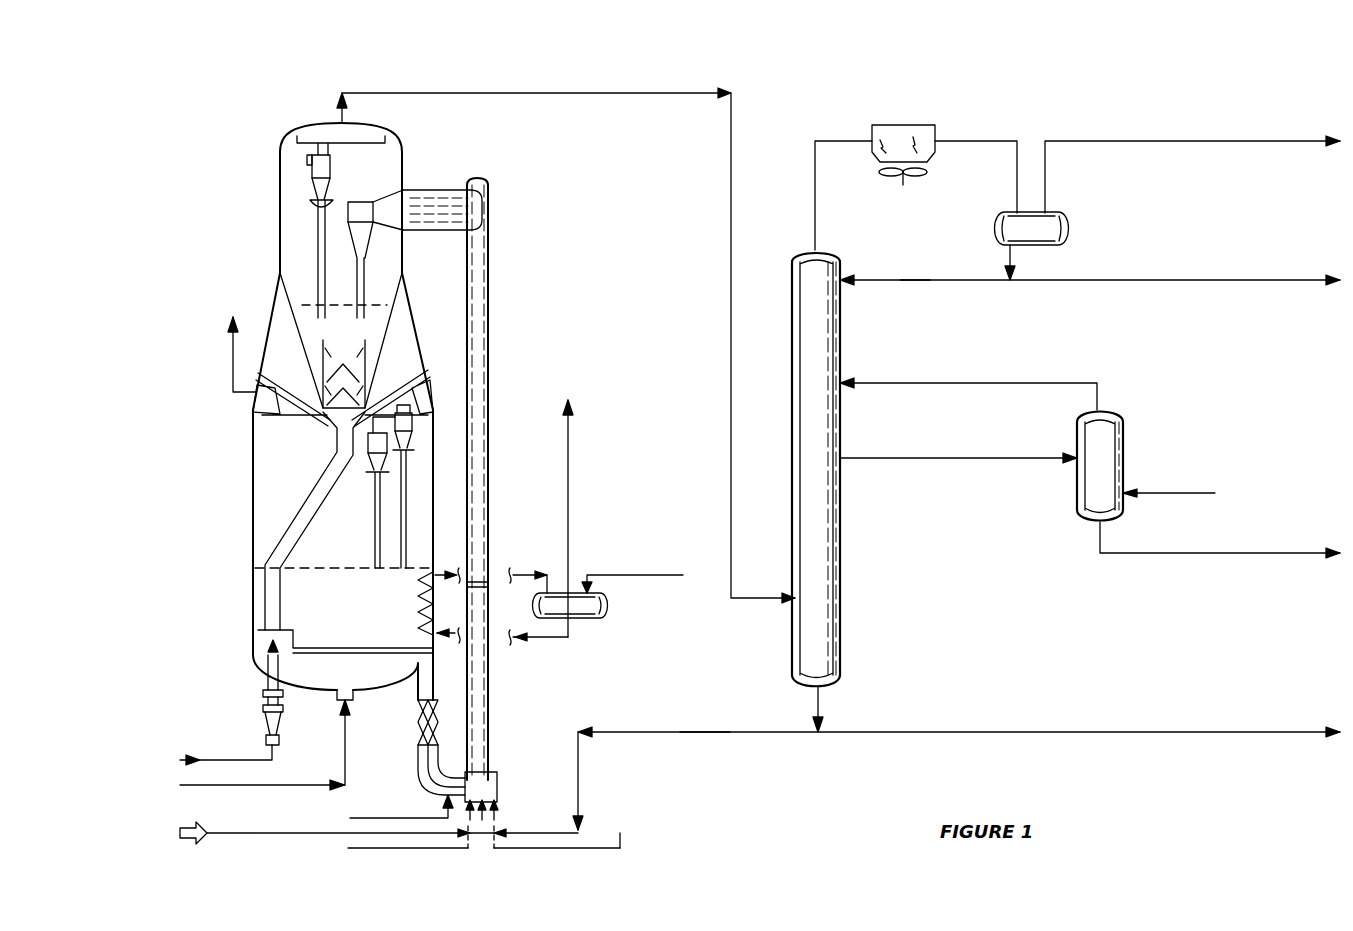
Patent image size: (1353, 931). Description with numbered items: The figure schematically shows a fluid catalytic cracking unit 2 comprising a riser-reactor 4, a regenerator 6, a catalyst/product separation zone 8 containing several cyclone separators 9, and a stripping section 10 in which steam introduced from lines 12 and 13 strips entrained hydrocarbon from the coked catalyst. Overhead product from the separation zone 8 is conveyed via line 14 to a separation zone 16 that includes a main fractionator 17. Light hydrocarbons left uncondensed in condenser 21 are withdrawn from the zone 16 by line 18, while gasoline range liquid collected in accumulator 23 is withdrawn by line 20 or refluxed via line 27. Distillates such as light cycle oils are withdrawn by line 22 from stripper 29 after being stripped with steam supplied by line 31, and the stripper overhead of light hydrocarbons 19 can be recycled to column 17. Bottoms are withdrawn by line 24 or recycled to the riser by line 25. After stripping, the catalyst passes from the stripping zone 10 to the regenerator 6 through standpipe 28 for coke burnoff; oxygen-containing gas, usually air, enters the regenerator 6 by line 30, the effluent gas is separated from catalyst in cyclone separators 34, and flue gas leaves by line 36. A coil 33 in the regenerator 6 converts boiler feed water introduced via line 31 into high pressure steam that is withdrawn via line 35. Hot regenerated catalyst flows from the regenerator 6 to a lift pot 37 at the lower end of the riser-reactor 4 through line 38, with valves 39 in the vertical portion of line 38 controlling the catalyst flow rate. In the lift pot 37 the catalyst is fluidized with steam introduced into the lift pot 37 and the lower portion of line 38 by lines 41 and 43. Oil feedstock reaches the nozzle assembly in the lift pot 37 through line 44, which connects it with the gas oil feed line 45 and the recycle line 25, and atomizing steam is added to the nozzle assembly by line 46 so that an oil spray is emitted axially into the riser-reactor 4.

The fluid catalytic cracking unit 2 is at (216, 265).
The riser-reactor 4 is at (491, 316).
The regenerator 6 is at (252, 456).
The catalyst/product separation zone 8 is at (280, 194).
The cyclone separators 9 is at (334, 166).
The stripping section 10 is at (323, 369).
The steam line 12 is at (437, 374).
The steam line 13 is at (232, 757).
The overhead product line 14 is at (587, 94).
The separation zone 16 is at (838, 124).
The main fractionator 17 is at (844, 369).
The light hydrocarbon line 18 is at (1162, 140).
The stripper overhead 19 is at (992, 382).
The gasoline withdrawal line 20 is at (1212, 279).
The condenser 21 is at (911, 125).
The distillate line 22 is at (1185, 555).
The accumulator 23 is at (1070, 229).
The bottoms line 24 is at (1010, 731).
The recycle line 25 is at (705, 735).
The reflux line 27 is at (915, 282).
The standpipe 28 is at (333, 444).
The stripper 29 is at (1123, 426).
The oxygen-containing gas line 30 is at (345, 758).
The steam/boiler feed water line 31 is at (641, 574).
The coil 33 is at (418, 621).
The cyclone separators 34 is at (412, 420).
The steam withdrawal line 35 is at (572, 456).
The flue gas line 36 is at (233, 351).
The lift pot 37 is at (498, 786).
The catalyst transfer line 38 is at (418, 761).
The valves 39 is at (418, 723).
The fluidizing gas line 41 is at (400, 848).
The fluidizing gas line 43 is at (400, 818).
The oil feed line 44 is at (483, 844).
The gas oil feed line 45 is at (262, 835).
The atomizing steam line 46 is at (607, 848).